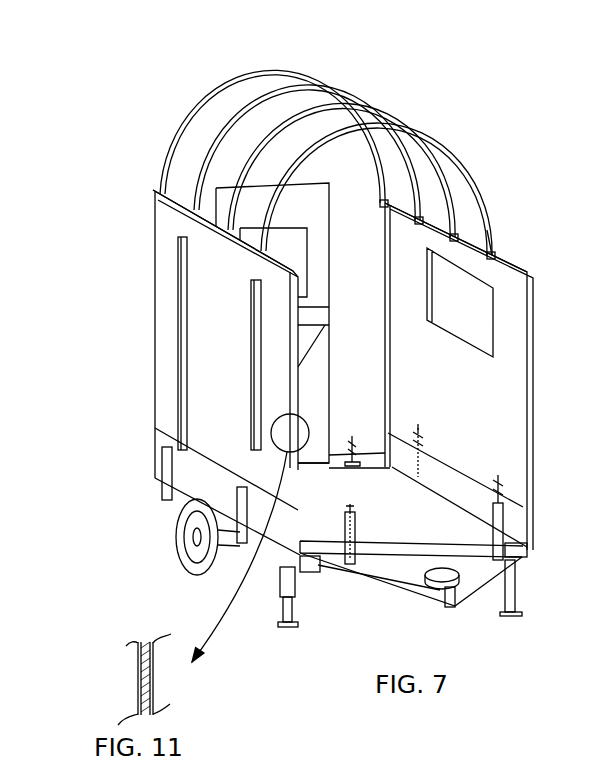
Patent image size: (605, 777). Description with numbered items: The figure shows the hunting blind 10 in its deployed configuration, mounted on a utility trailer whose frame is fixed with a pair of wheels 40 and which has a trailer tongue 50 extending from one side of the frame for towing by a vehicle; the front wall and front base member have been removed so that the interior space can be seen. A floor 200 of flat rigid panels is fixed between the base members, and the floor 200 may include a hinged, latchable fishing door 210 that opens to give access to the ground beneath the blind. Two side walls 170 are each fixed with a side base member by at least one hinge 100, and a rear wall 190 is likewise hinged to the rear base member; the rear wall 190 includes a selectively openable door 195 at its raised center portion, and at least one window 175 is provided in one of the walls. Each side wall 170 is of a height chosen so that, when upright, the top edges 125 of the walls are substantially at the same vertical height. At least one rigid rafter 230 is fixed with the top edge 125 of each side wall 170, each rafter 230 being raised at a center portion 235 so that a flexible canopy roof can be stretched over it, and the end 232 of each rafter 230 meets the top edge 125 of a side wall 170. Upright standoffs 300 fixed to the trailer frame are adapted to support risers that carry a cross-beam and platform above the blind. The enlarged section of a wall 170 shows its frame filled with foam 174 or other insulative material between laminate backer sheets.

In FIG. 7, the hunting blind 10 is at (488, 48).
In FIG. 7, the wheels 40 is at (172, 568).
In FIG. 7, the trailer tongue 50 is at (408, 593).
In FIG. 7, the hinge 100 is at (421, 447).
In FIG. 7, the top edge 125 is at (237, 245).
In FIG. 7, the side wall 170 is at (168, 220).
In FIG. 11, the side wall 170 is at (135, 687).
In FIG. 11, the foam 174 is at (147, 673).
In FIG. 7, the window 175 is at (277, 247).
In FIG. 7, the rear wall 190 is at (374, 456).
In FIG. 7, the door 195 is at (323, 247).
In FIG. 7, the floor 200 is at (450, 527).
In FIG. 7, the fishing door 210 is at (307, 527).
In FIG. 7, the rafter 230 is at (167, 143).
In FIG. 7, the arch end 232 is at (493, 250).
In FIG. 7, the center portion 235 is at (386, 206).
In FIG. 7, the standoff 300 is at (528, 548).